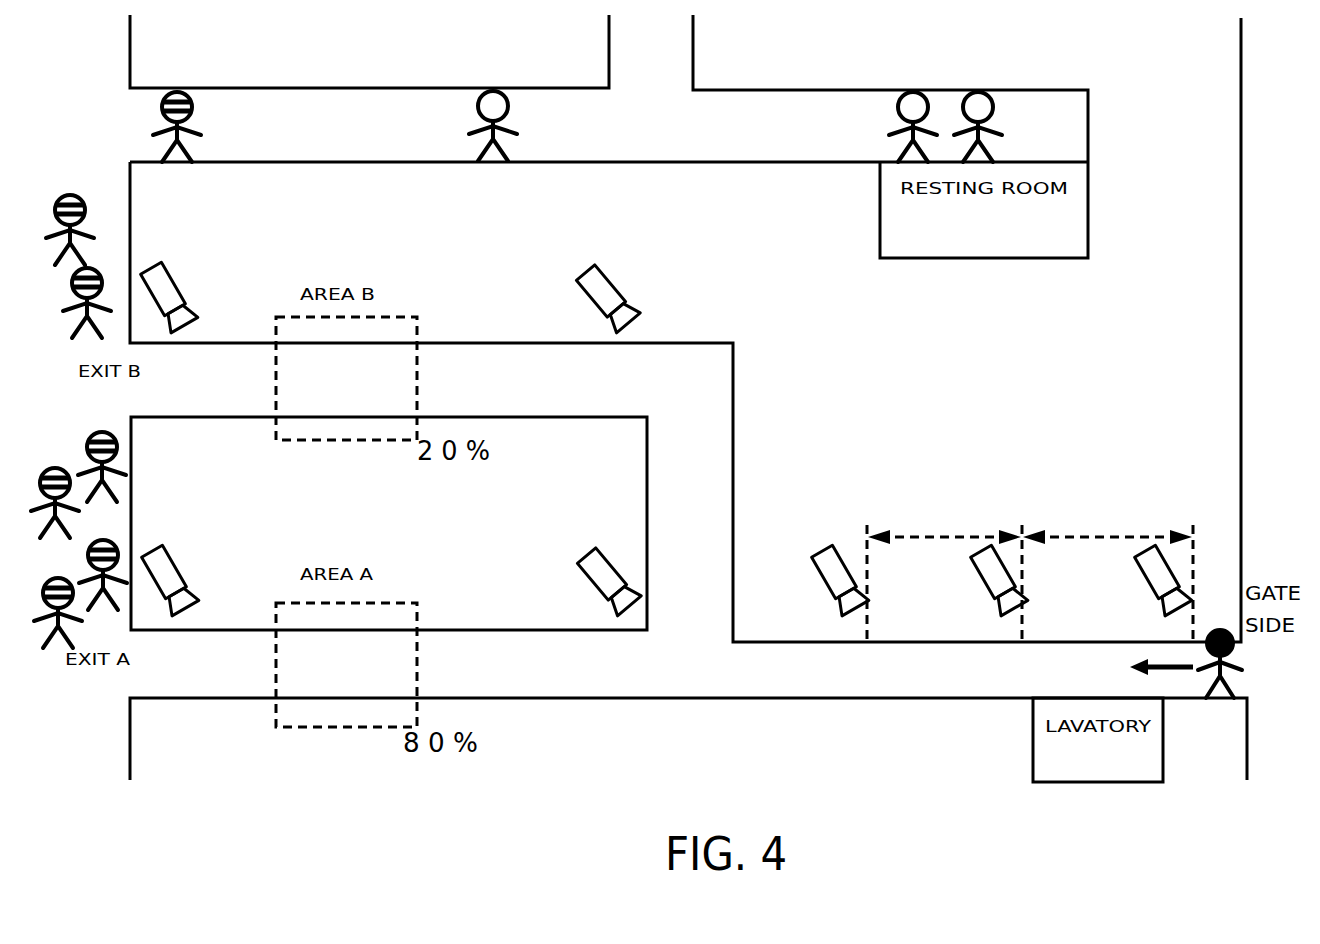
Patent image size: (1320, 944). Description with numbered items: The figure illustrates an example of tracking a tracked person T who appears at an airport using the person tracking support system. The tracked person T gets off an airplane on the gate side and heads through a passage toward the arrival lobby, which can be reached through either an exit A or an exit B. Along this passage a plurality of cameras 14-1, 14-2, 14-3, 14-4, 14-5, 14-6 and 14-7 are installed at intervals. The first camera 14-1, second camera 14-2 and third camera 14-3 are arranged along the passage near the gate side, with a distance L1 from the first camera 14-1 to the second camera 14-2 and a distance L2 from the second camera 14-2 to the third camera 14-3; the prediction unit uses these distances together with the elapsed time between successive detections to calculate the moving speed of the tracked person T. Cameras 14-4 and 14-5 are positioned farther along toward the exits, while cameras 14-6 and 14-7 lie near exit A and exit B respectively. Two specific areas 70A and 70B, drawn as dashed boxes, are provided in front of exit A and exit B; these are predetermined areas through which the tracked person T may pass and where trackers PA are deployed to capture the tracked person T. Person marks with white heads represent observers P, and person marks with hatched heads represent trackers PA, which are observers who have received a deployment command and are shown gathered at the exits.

The first camera 14-1 is at (1146, 579).
The second camera 14-2 is at (980, 579).
The third camera 14-3 is at (822, 579).
The camera 14-4 is at (593, 584).
The camera 14-5 is at (590, 302).
The camera 14-6 is at (177, 563).
The camera 14-7 is at (175, 281).
The specific area 70A is at (412, 602).
The specific area 70B is at (410, 316).
The observer P is at (509, 103).
The tracker PA is at (194, 102).
The tracked person T is at (1233, 646).
The distance L1 is at (1107, 523).
The distance L2 is at (944, 523).